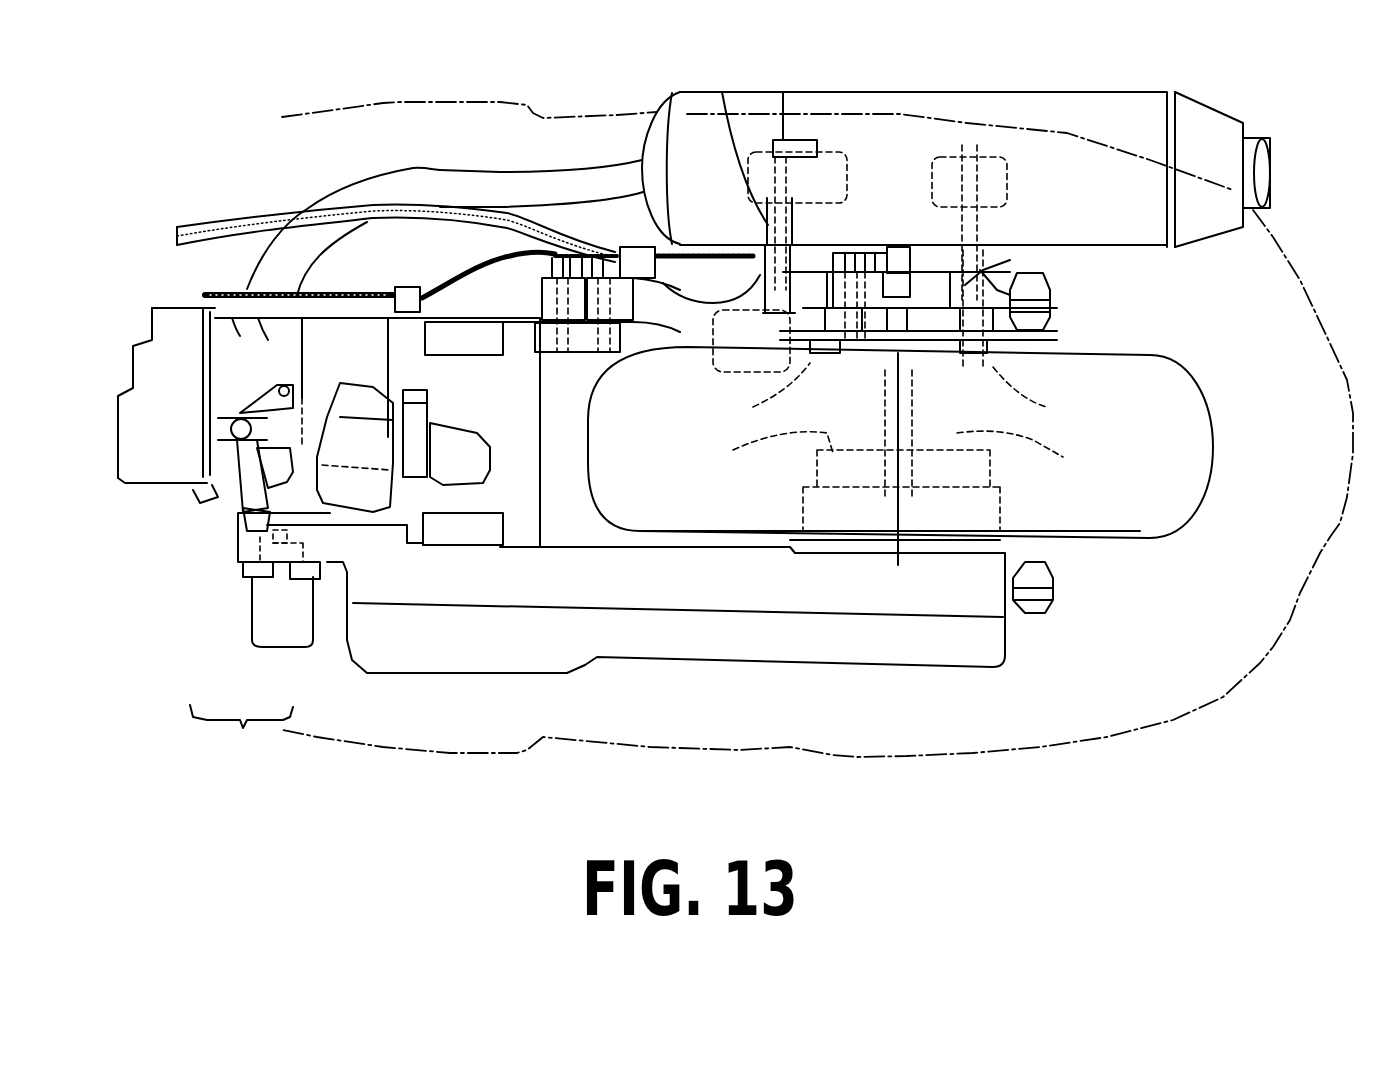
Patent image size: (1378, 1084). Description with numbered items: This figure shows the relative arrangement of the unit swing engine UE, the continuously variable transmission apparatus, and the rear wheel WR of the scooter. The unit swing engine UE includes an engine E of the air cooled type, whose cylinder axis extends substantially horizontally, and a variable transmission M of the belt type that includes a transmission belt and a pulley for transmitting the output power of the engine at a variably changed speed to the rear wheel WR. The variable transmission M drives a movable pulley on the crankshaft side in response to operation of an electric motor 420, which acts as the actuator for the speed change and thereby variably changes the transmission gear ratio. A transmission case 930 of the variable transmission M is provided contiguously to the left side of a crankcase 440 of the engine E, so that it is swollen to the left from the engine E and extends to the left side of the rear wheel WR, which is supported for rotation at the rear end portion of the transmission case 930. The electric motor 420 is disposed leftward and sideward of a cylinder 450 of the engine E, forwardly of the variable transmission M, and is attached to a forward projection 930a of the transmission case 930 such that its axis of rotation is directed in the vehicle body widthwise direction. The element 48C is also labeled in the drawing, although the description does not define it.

The cylinder 450 is at (328, 323).
The bracket 48C is at (1010, 260).
The crankcase 440 is at (527, 463).
The electric motor 420 is at (300, 597).
The transmission case 930 is at (600, 643).
The forward projection 930a is at (238, 545).
The rear wheel WR is at (1213, 433).
The engine E is at (220, 560).
The variable transmission M is at (340, 644).
The unit swing engine UE is at (241, 734).